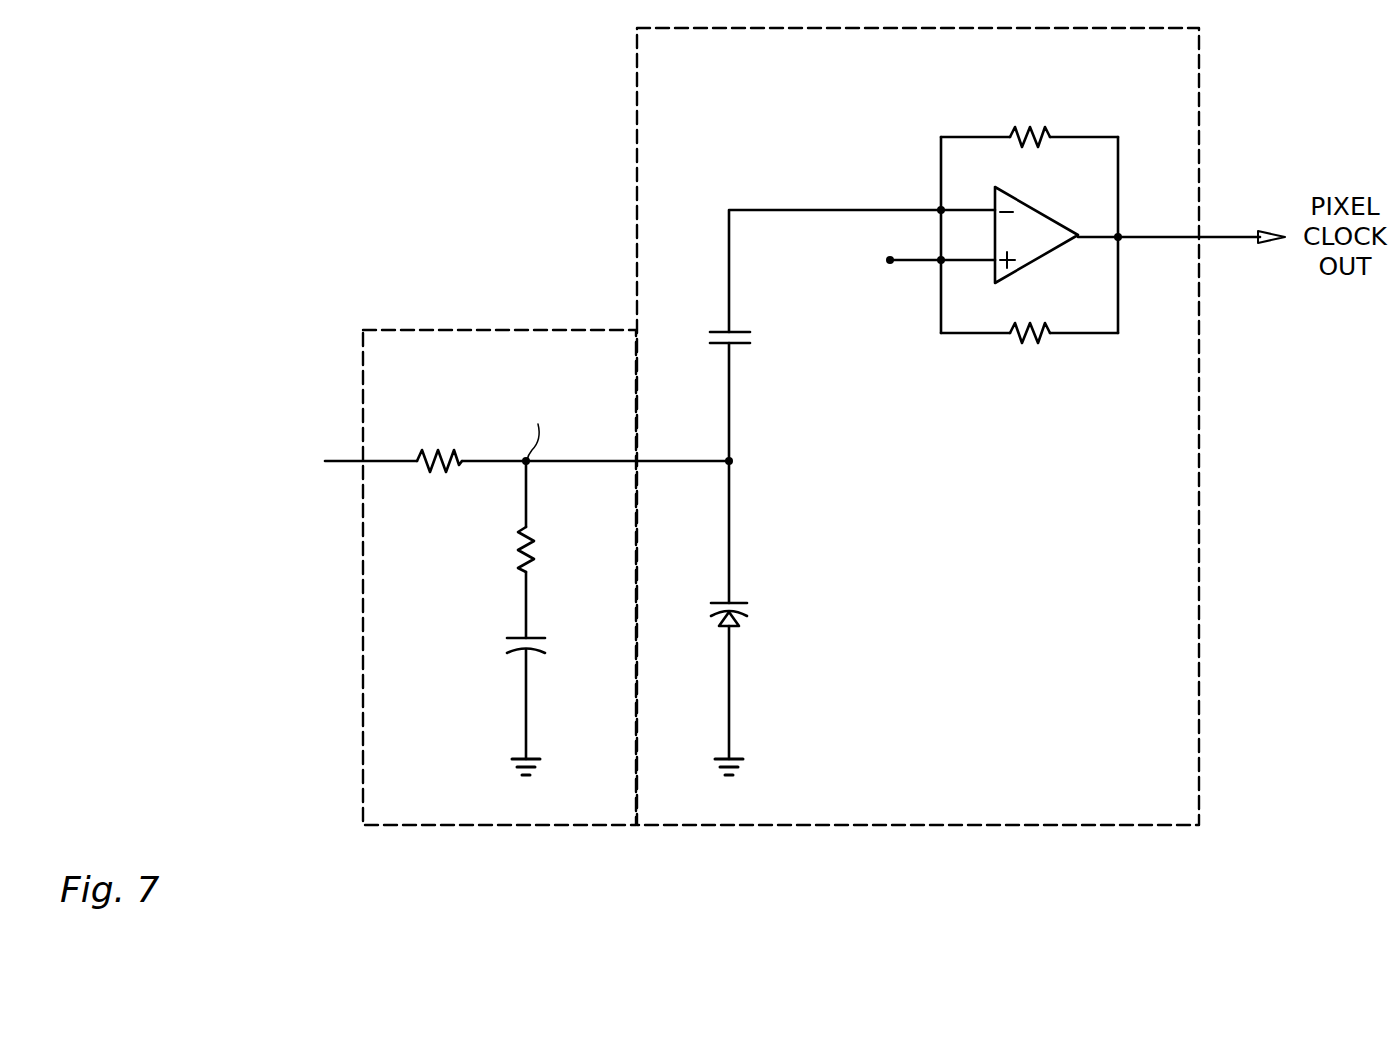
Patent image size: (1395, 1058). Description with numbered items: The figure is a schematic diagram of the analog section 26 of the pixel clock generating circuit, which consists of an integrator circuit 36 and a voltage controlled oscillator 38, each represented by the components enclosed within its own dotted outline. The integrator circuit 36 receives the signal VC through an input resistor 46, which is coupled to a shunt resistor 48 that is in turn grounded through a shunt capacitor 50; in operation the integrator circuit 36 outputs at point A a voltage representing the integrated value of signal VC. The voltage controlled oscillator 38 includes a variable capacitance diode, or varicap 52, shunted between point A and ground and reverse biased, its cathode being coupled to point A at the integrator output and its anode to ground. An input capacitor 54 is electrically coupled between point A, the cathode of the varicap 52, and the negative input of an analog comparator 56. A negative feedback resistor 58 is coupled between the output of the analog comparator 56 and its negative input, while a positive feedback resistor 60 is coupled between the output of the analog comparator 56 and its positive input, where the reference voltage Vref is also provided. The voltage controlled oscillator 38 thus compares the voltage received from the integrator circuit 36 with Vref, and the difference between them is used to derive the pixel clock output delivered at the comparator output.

The analog section 26 is at (527, 217).
The integrator circuit 36 is at (425, 370).
The voltage controlled oscillator 38 is at (730, 79).
The input resistor 46 is at (458, 455).
The shunt resistor 48 is at (521, 557).
The shunt capacitor 50 is at (508, 650).
The variable capacitance diode (varicap) 52 is at (748, 607).
The input capacitor 54 is at (746, 330).
The analog comparator 56 is at (1052, 212).
The negative feedback resistor 58 is at (1050, 135).
The positive feedback resistor 60 is at (1040, 338).